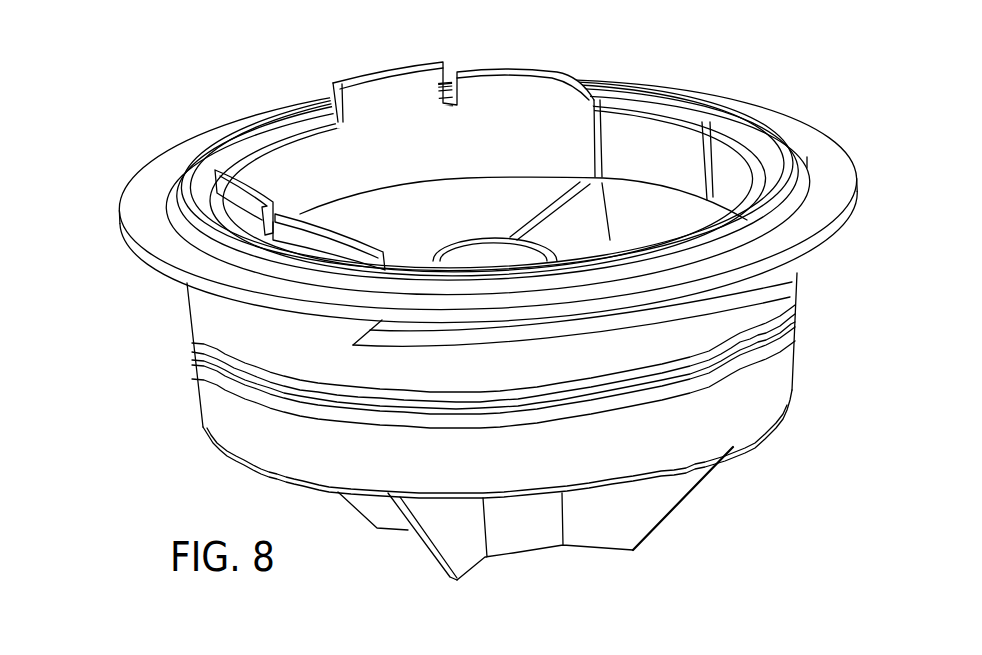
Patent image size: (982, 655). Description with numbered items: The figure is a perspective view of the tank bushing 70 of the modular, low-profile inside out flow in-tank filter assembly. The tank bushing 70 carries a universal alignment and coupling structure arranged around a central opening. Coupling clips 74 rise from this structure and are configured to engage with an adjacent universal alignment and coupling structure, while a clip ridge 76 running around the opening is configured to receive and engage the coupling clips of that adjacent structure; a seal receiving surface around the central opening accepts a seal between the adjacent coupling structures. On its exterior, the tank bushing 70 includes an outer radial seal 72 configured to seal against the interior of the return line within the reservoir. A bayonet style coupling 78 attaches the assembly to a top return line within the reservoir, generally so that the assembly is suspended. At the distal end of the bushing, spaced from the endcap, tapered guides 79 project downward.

The tank bushing 70 is at (86, 152).
The outer radial seal 72 is at (777, 347).
The coupling clips 74 is at (387, 96).
The clip ridge 76 is at (750, 157).
The bayonet style coupling 78 is at (808, 258).
The tapered guides 79 is at (633, 505).